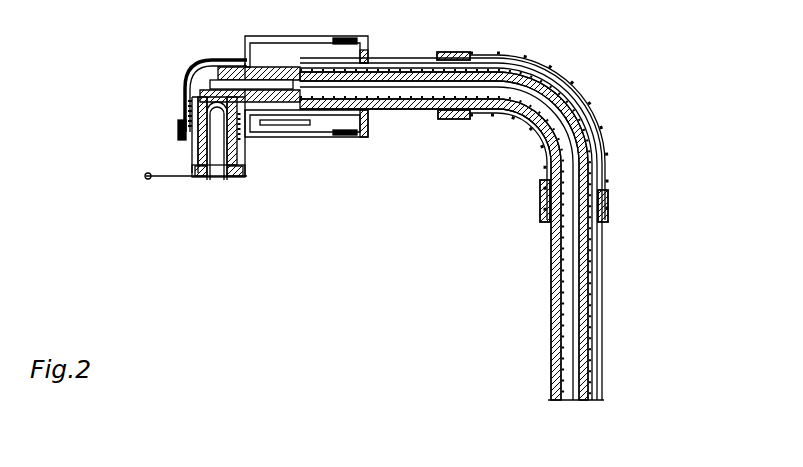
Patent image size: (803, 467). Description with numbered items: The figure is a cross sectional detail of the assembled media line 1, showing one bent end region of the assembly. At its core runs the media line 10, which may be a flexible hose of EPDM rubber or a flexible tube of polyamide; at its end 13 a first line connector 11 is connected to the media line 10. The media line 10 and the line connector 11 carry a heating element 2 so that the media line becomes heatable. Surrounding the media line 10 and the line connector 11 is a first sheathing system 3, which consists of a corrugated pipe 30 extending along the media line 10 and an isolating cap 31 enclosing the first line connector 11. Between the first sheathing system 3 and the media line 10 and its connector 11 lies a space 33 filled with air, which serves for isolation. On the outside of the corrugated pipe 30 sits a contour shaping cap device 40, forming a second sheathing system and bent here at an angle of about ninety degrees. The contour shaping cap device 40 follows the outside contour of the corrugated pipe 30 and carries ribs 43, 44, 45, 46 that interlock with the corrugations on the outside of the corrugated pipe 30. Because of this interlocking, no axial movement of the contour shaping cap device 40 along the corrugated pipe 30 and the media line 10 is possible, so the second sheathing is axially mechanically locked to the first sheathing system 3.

The assembled media line 1 is at (377, 200).
The heating element 2 is at (392, 72).
The first sheathing system 3 is at (372, 141).
The media line 10 is at (410, 77).
The first line connector 11 is at (185, 157).
The end of the media line 13 is at (275, 95).
The corrugated pipe 30 is at (558, 318).
The isolating cap 31 is at (205, 62).
The space 33 is at (557, 370).
The contour shaping cap device 40 is at (555, 86).
The rib 43 is at (440, 54).
The rib 44 is at (470, 53).
The rib 45 is at (600, 212).
The rib 46 is at (598, 222).